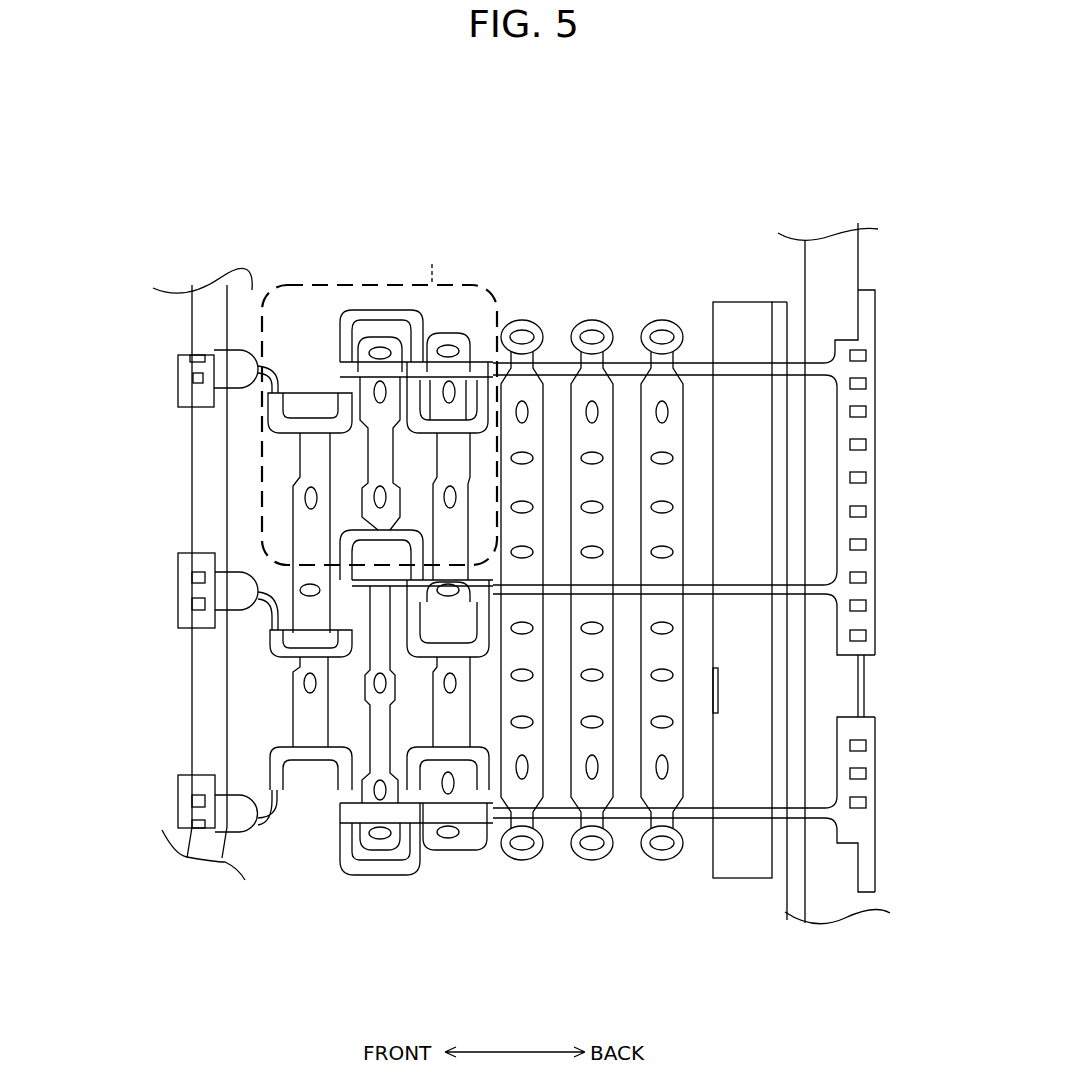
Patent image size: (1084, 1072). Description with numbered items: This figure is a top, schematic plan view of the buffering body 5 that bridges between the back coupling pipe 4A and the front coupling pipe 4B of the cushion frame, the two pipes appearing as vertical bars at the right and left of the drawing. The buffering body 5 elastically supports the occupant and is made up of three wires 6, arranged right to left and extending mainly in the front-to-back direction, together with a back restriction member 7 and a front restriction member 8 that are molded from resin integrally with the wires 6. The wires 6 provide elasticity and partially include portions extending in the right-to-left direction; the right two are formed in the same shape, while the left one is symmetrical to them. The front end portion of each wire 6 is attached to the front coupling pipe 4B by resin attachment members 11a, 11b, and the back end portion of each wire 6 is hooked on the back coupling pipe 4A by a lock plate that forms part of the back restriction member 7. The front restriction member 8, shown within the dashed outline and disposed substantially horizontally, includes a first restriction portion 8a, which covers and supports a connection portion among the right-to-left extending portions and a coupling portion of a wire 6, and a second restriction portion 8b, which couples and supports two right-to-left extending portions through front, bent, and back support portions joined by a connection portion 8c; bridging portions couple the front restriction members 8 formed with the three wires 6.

The buffering body 5 is at (629, 178).
The wire 6 is at (707, 363).
The back restriction member 7 is at (740, 310).
The front restriction member 8 is at (489, 266).
The first restriction portion 8a is at (257, 430).
The second restriction portion 8b is at (345, 300).
The connection portion 8c is at (387, 325).
The back coupling pipe 4A is at (840, 267).
The front coupling pipe 4B is at (204, 324).
The attachment member 11a is at (187, 592).
The attachment member 11b is at (186, 396).